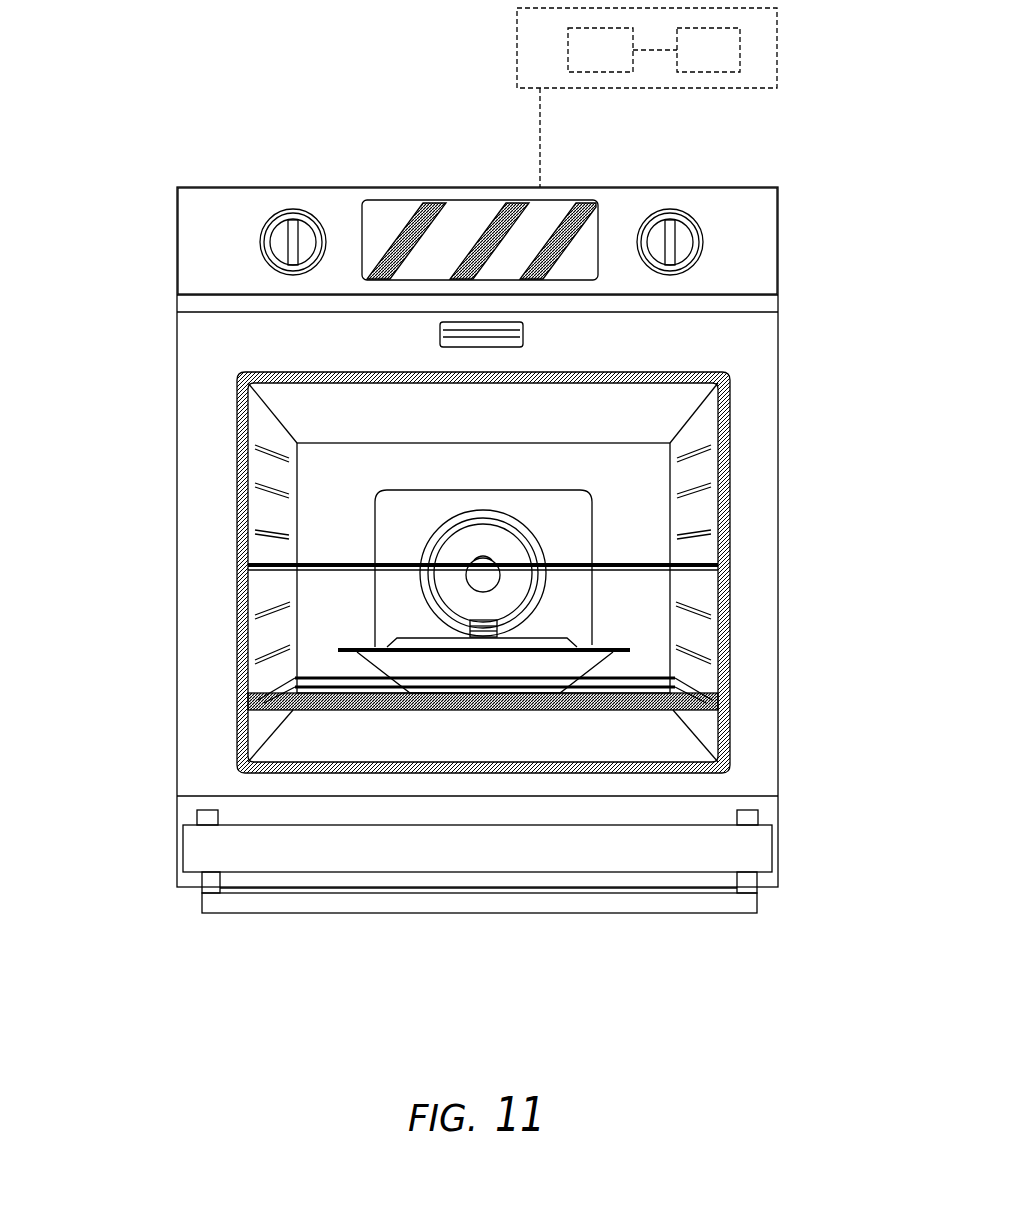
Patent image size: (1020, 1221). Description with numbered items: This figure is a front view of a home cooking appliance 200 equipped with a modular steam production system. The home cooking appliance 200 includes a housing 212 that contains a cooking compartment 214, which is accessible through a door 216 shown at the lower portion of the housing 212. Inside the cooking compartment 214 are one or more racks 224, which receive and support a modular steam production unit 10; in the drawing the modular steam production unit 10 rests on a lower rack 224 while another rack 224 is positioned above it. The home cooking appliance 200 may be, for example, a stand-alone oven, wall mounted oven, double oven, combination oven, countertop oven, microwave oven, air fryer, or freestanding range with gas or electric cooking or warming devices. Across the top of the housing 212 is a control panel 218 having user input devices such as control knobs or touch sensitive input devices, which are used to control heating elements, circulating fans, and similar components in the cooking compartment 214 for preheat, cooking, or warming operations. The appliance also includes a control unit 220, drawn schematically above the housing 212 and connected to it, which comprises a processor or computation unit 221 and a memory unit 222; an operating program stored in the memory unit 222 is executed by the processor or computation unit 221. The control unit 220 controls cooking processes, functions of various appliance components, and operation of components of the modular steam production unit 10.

The modular steam production unit 10 is at (601, 648).
The home cooking appliance 200 is at (886, 958).
The housing 212 is at (779, 681).
The cooking compartment 214 is at (252, 426).
The door 216 is at (183, 858).
The control panel 218 is at (177, 240).
The control unit 220 is at (517, 47).
The processor or computation unit 221 is at (622, 50).
The memory unit 222 is at (708, 50).
The rack 224 is at (303, 563).